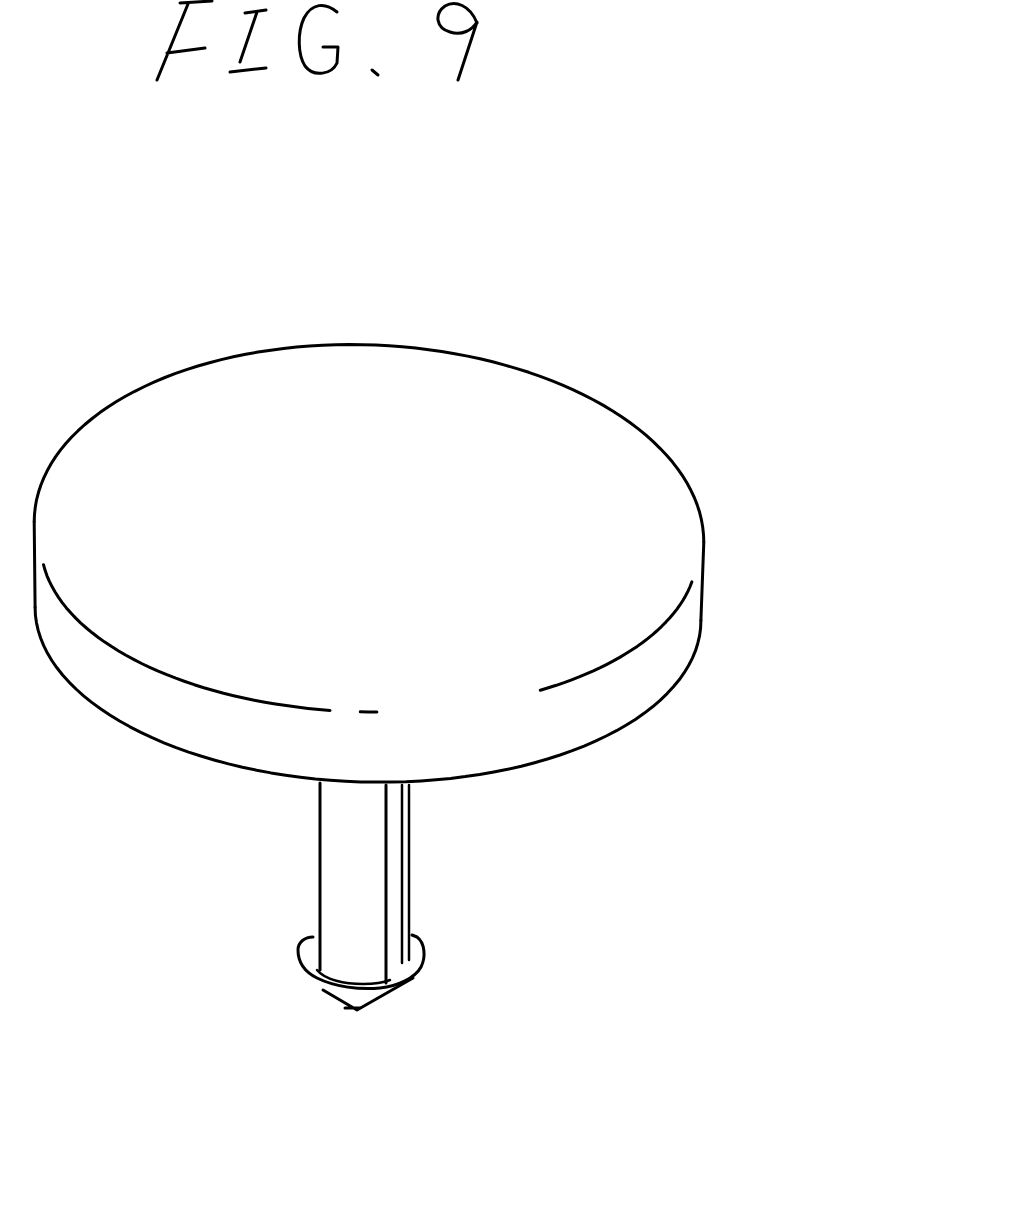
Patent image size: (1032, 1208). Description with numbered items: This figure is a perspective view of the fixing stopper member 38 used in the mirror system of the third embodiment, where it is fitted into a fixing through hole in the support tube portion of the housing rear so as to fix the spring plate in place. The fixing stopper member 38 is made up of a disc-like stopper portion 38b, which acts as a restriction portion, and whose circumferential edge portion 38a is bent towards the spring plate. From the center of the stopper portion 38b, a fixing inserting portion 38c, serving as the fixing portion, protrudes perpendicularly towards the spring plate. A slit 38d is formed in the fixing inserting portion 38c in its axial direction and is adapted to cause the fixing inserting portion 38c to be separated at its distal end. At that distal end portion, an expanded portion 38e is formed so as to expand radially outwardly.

The fixing stopper member 38 is at (561, 318).
The circumferential edge portion 38a is at (670, 687).
The stopper portion 38b is at (617, 490).
The fixing inserting portion 38c is at (343, 875).
The slit 38d is at (396, 904).
The expanded portion 38e is at (352, 1004).